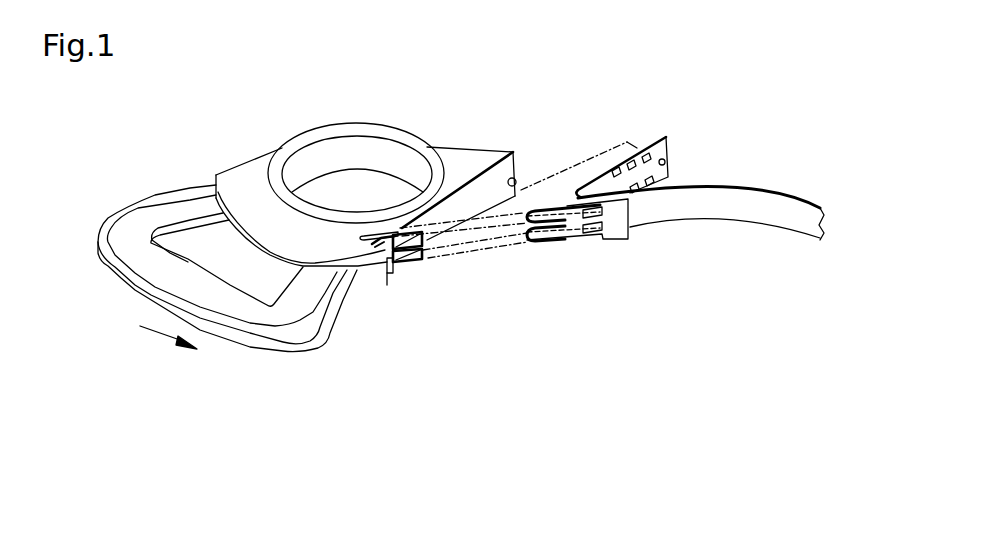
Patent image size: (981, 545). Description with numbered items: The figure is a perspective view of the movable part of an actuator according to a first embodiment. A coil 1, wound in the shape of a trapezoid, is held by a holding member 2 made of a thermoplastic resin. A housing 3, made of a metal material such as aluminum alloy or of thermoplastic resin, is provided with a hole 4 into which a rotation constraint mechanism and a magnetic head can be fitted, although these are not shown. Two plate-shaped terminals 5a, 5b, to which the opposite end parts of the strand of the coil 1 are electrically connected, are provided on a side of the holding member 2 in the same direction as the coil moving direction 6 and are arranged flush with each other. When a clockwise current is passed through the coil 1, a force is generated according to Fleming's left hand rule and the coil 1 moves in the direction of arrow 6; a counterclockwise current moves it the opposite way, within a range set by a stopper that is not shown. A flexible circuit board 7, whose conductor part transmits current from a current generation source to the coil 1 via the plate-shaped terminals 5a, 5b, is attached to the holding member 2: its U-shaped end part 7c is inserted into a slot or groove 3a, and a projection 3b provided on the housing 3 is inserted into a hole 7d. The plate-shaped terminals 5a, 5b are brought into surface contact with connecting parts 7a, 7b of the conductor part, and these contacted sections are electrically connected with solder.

The coil 1 is at (303, 292).
The holding member 2 is at (235, 180).
The housing 3 is at (320, 128).
The slot or groove 3a is at (387, 233).
The projection 3b is at (521, 188).
The hole 4 is at (353, 187).
The plate-shaped terminal 5a is at (435, 243).
The plate-shaped terminal 5b is at (421, 257).
The coil moving direction 6 is at (168, 345).
The flexible circuit board 7 is at (774, 203).
The connecting part 7a is at (627, 225).
The connecting part 7b is at (600, 225).
The U-shaped end part 7c is at (561, 237).
The hole 7d is at (668, 158).